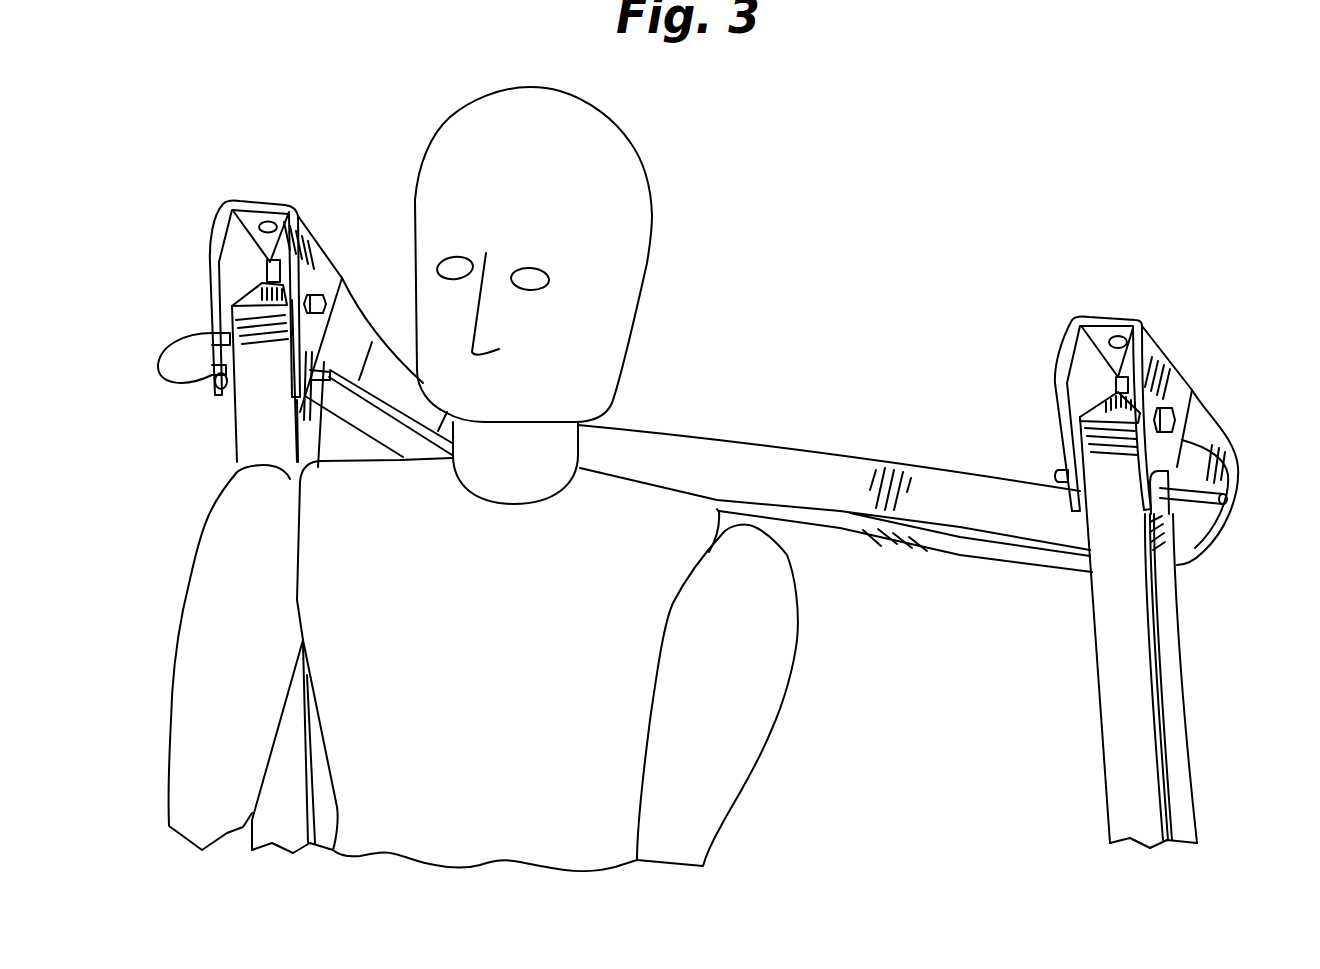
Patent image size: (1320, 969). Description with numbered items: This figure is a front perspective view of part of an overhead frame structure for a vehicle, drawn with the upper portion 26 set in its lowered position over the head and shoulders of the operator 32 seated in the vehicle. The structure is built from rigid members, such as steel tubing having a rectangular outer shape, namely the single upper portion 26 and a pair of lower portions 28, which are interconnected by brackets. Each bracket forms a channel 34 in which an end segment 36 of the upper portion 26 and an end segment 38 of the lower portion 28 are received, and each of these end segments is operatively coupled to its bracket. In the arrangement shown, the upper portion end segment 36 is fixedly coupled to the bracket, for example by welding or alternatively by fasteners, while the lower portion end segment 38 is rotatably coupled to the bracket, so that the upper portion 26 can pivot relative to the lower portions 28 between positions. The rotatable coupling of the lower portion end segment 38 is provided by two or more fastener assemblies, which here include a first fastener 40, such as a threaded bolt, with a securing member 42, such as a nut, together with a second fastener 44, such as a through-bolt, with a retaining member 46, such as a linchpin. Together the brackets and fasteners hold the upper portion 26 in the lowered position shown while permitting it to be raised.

The upper portion 26 is at (722, 447).
The lower portion 28 is at (1173, 710).
The operator 32 is at (612, 152).
The channel 34 is at (298, 202).
The end segment of the upper portion 36 is at (312, 219).
The end segment of the lower portion 38 is at (148, 312).
The first fastener 40 is at (1175, 418).
The securing member 42 is at (324, 304).
The second fastener 44 is at (1237, 452).
The retaining member 46 is at (300, 423).